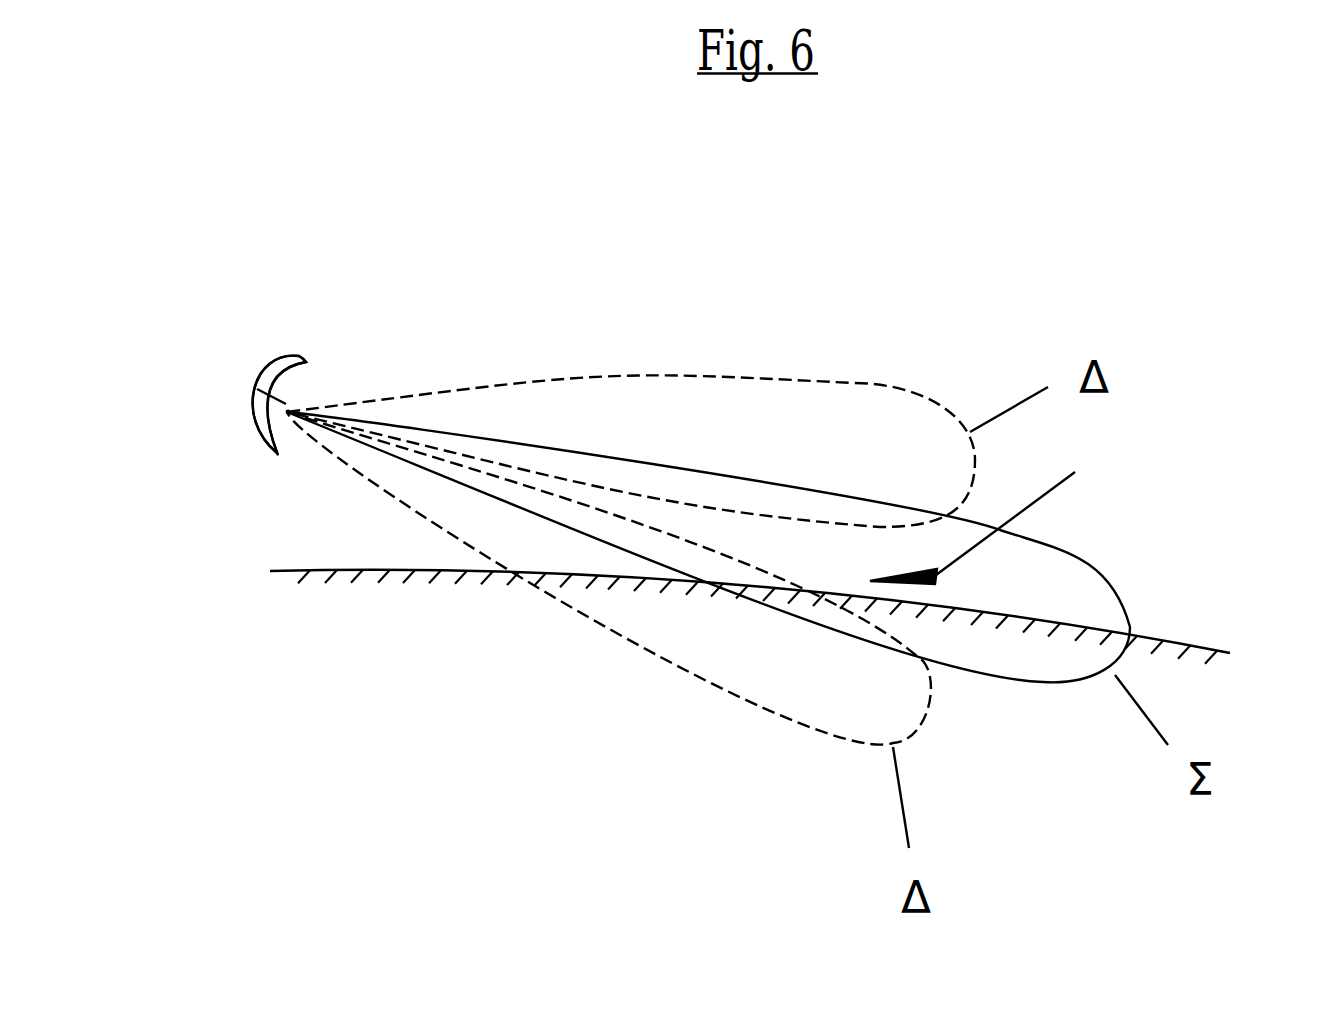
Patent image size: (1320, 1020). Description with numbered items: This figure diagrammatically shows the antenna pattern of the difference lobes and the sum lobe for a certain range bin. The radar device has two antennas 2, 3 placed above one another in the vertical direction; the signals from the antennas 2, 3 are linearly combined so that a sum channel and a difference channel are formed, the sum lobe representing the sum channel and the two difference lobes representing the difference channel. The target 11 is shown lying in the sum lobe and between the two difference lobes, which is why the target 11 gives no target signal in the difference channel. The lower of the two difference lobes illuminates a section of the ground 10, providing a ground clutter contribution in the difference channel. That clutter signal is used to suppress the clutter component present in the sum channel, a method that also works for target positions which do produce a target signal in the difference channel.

The antenna 2 is at (258, 419).
The antenna 3 is at (278, 375).
The ground surface 10 is at (1010, 617).
The target 11 is at (1000, 521).